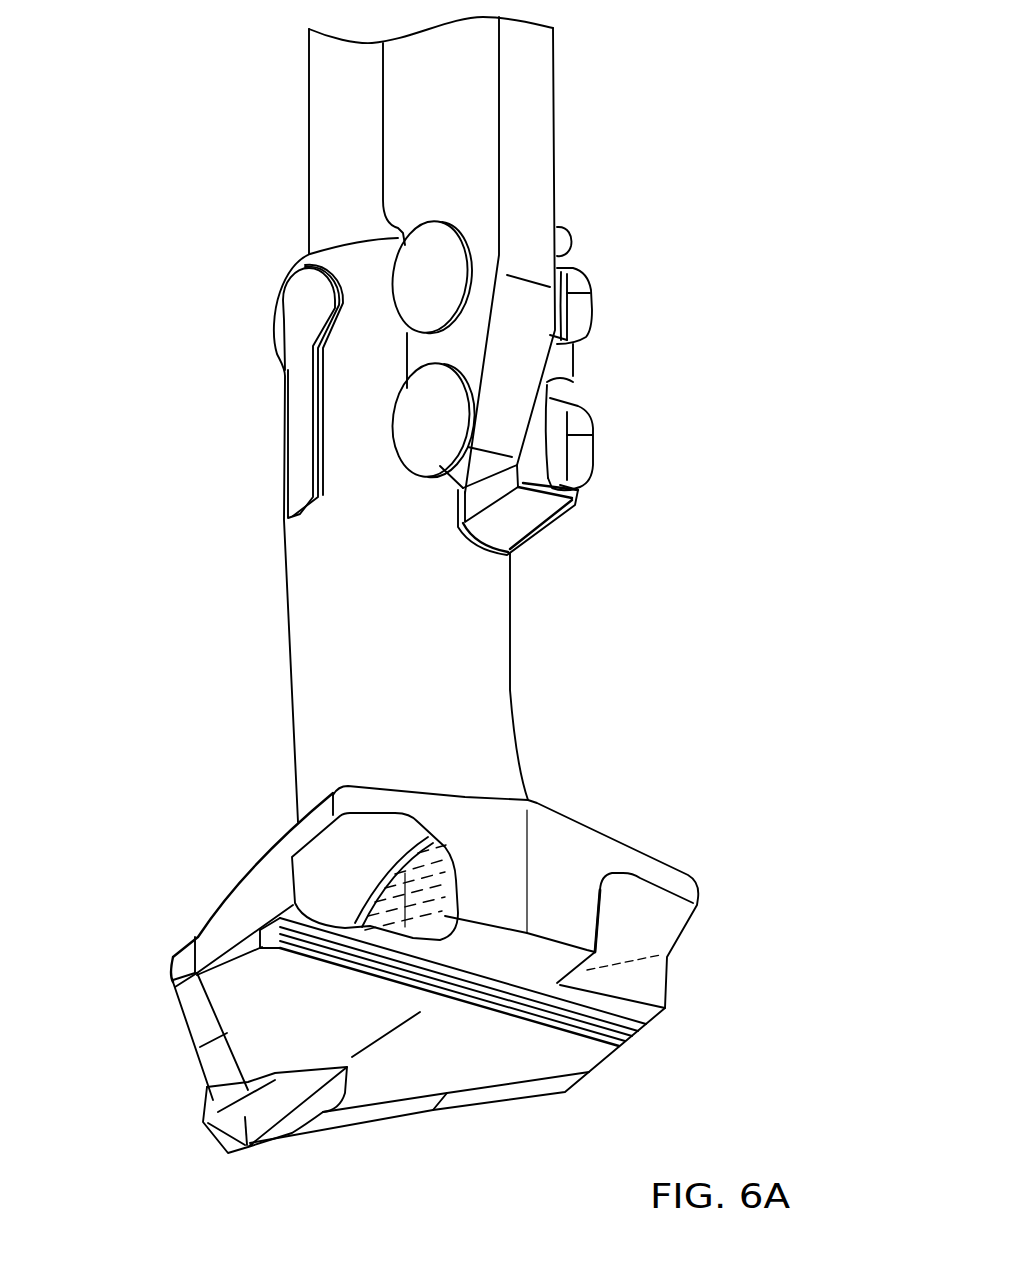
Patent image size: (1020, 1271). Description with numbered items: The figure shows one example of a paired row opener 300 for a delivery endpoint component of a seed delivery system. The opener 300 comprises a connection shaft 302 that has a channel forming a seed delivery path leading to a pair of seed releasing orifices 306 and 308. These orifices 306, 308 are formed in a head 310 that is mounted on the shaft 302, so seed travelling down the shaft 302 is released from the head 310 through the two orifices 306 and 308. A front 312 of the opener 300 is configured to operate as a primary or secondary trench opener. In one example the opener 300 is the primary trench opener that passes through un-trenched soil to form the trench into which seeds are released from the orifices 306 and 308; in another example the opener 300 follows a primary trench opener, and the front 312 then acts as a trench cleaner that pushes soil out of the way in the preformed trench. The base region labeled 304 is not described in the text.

The paired row opener 300 is at (722, 53).
The connection shaft 302 is at (308, 110).
The base 304 is at (222, 903).
The seed releasing orifice 306 is at (387, 843).
The seed releasing orifice 308 is at (662, 920).
The head 310 is at (272, 890).
The front 312 is at (207, 1102).